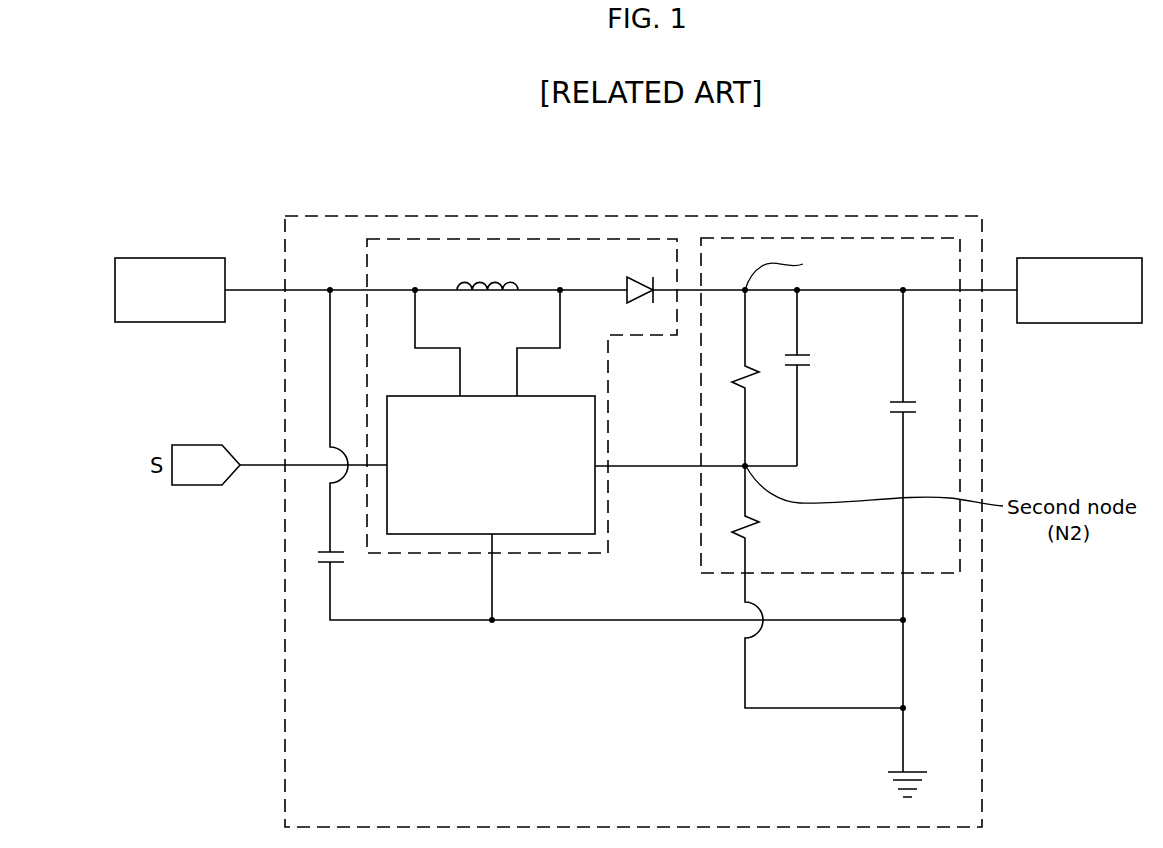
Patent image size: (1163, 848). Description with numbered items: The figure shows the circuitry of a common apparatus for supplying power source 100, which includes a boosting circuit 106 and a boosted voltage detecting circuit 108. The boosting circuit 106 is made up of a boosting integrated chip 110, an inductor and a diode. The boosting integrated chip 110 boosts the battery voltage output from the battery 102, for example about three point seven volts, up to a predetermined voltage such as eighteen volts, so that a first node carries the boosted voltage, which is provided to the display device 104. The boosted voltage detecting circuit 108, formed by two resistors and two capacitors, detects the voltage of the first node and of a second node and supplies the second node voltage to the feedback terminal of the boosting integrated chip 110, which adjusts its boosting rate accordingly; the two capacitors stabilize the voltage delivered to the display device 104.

The apparatus for supplying power source 100 is at (982, 645).
The battery 102 is at (172, 258).
The display device 104 is at (1068, 258).
The boosting circuit 106 is at (522, 382).
The boosted voltage detecting circuit 108 is at (785, 238).
The boosting integrated chip 110 is at (527, 534).